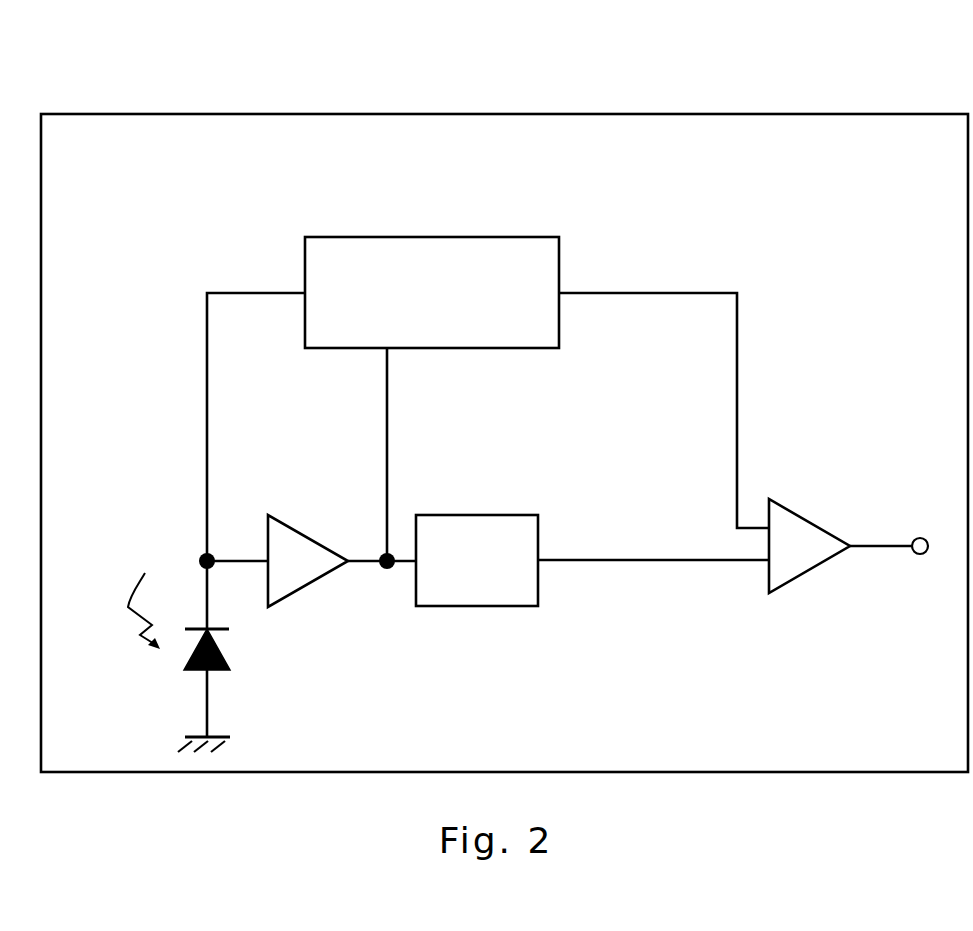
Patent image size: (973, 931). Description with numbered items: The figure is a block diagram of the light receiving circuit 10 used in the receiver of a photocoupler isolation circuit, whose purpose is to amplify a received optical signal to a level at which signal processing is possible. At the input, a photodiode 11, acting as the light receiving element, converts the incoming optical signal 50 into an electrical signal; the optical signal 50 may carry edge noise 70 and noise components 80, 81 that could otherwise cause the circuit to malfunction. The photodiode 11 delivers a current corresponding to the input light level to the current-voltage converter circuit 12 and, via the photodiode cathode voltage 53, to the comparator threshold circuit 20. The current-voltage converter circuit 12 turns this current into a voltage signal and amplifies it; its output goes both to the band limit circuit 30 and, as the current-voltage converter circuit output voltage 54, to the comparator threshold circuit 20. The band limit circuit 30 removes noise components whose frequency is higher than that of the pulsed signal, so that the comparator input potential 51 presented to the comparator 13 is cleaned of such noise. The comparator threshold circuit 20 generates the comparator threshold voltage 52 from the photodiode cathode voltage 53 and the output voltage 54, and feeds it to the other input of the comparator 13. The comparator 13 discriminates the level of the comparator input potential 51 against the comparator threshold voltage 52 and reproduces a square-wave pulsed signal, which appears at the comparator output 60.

The light receiving circuit 10 is at (914, 39).
The photodiode 11 is at (225, 650).
The current-voltage converter circuit 12 is at (286, 523).
The comparator 13 is at (810, 568).
The comparator threshold circuit 20 is at (410, 237).
The band limit circuit 30 is at (475, 606).
The optical signal 50 is at (131, 578).
The comparator input potential 51 is at (653, 563).
The comparator threshold voltage 52 is at (737, 368).
The photodiode cathode voltage 53 is at (207, 408).
The current-voltage converter circuit output voltage 54 is at (387, 427).
The comparator output 60 is at (920, 554).
The edge noise 70 is at (131, 578).
The noise component 80 is at (131, 578).
The noise component 81 is at (131, 578).